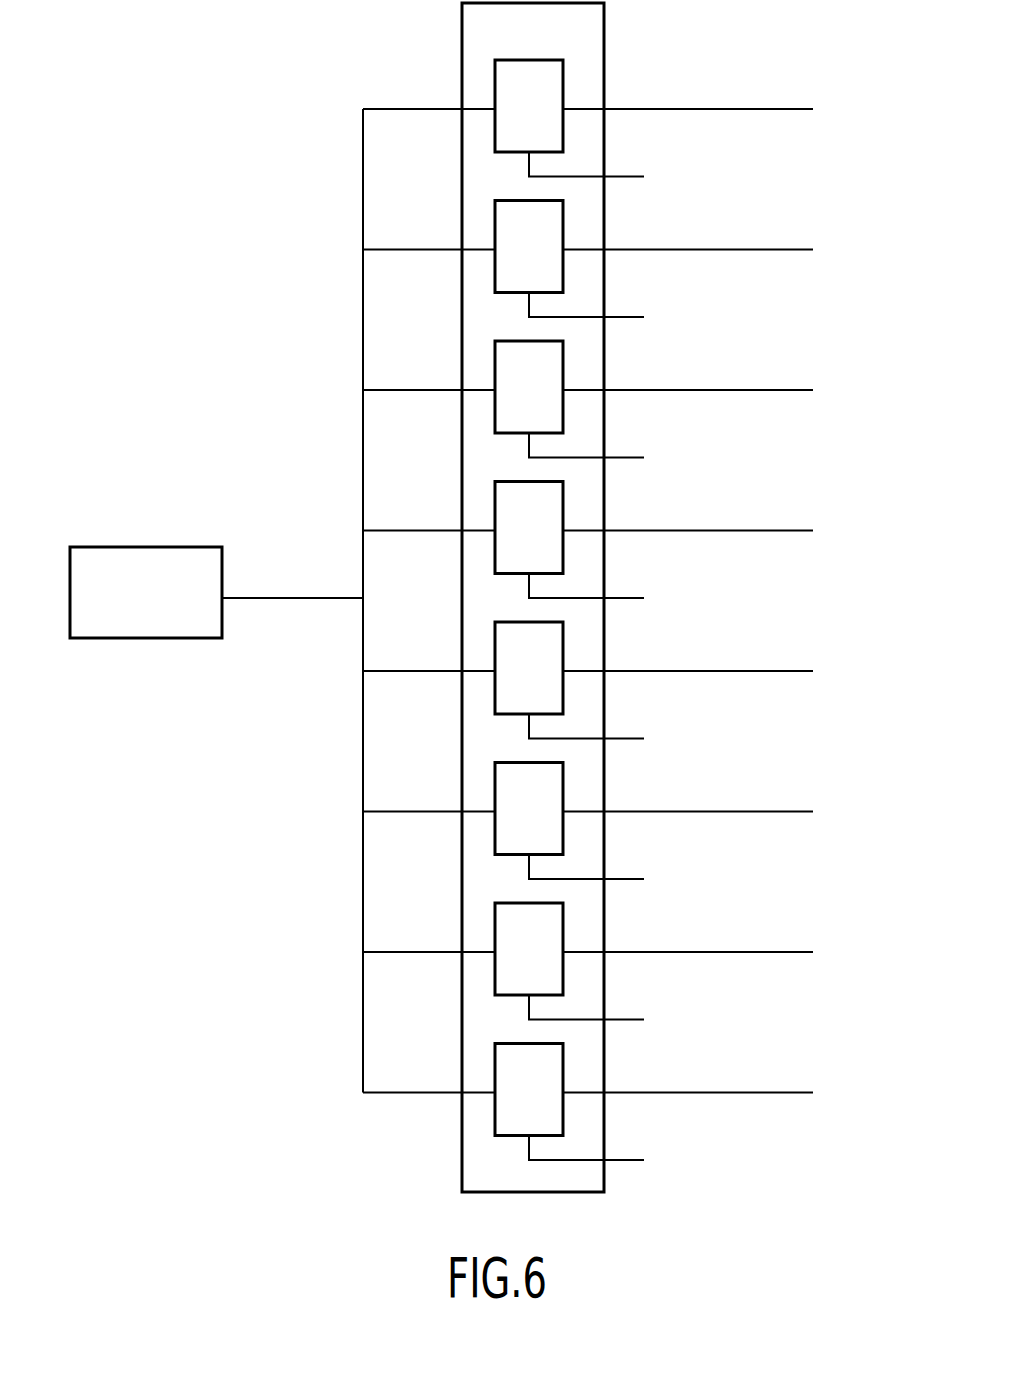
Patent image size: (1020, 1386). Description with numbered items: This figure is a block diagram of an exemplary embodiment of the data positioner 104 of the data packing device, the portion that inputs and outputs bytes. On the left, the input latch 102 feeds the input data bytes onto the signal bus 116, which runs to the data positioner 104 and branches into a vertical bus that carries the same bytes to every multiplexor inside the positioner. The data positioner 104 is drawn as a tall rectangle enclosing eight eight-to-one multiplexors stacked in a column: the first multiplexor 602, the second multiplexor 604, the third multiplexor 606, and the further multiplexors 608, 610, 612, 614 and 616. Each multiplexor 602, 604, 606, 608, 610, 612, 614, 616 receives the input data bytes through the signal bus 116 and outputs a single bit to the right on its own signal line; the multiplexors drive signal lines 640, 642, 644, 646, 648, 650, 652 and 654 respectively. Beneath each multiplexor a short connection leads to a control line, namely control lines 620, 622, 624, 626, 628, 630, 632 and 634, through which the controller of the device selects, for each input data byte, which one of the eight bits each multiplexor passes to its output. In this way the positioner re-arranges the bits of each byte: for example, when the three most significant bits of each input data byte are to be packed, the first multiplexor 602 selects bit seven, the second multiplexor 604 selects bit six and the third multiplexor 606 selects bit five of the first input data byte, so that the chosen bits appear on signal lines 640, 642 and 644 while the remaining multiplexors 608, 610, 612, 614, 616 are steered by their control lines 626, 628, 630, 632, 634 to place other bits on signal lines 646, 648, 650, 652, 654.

The input latch 102 is at (135, 638).
The signal bus 116 is at (312, 598).
The data positioner 104 is at (463, 1155).
The first multiplexor 602 is at (563, 75).
The second multiplexor 604 is at (563, 224).
The third multiplexor 606 is at (563, 364).
The multiplexor 608 is at (563, 504).
The multiplexor 610 is at (563, 645).
The multiplexor 612 is at (563, 786).
The multiplexor 614 is at (563, 926).
The multiplexor 616 is at (563, 1066).
The control line 620 is at (617, 176).
The control line 622 is at (617, 317).
The control line 624 is at (617, 458).
The control line 626 is at (617, 598).
The control line 628 is at (617, 738).
The control line 630 is at (617, 879).
The control line 632 is at (617, 1020).
The control line 634 is at (617, 1160).
The signal line 640 is at (775, 109).
The signal line 642 is at (775, 250).
The signal line 644 is at (775, 390).
The signal line 646 is at (775, 530).
The signal line 648 is at (775, 671).
The signal line 650 is at (775, 812).
The signal line 652 is at (775, 952).
The signal line 654 is at (775, 1092).